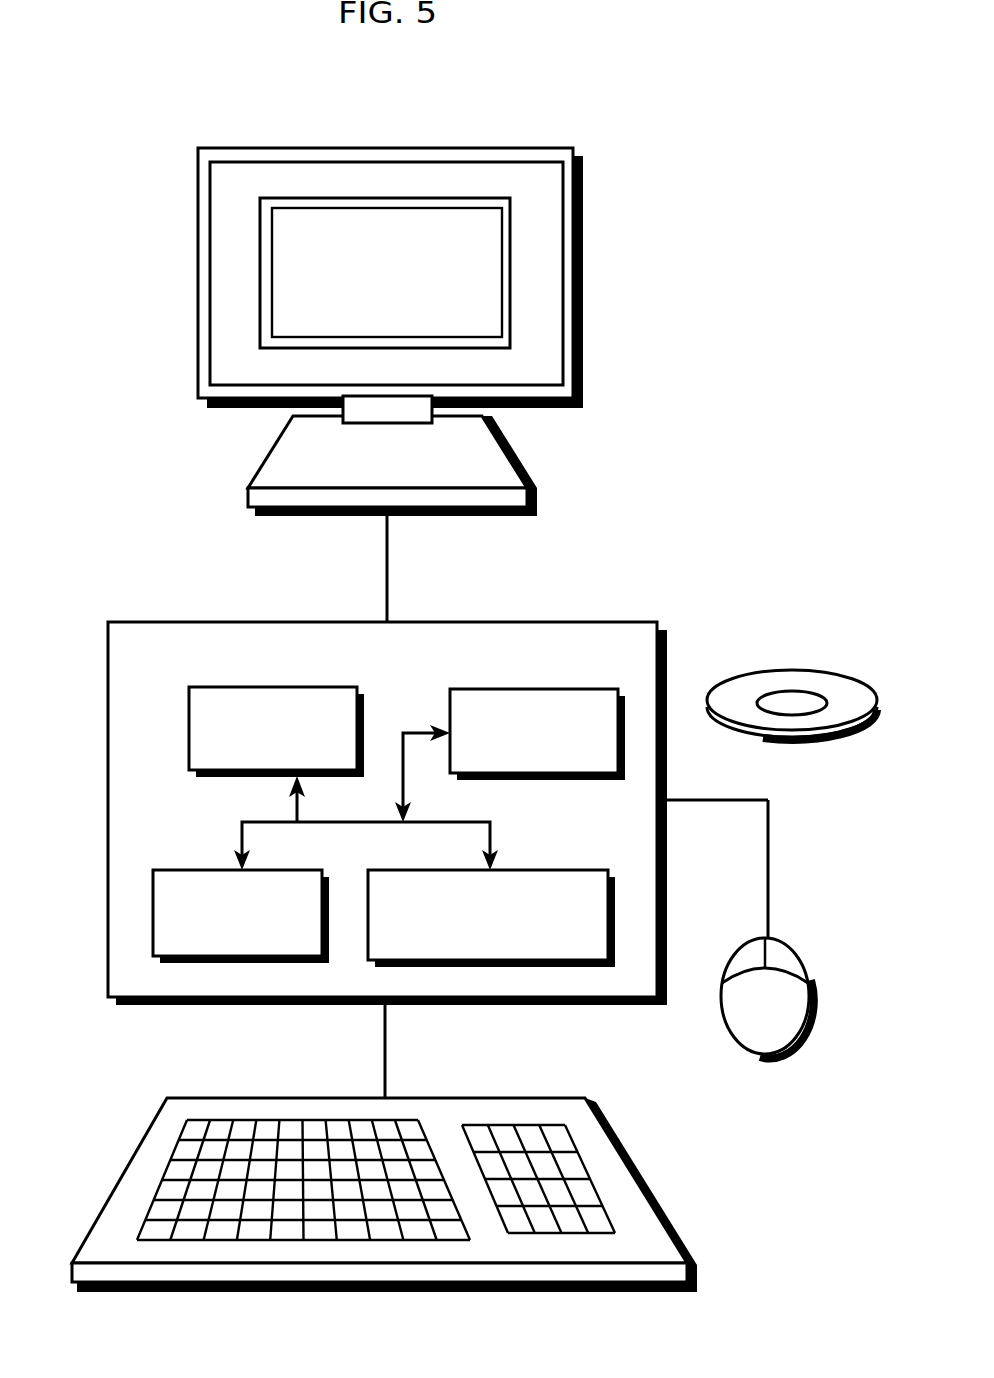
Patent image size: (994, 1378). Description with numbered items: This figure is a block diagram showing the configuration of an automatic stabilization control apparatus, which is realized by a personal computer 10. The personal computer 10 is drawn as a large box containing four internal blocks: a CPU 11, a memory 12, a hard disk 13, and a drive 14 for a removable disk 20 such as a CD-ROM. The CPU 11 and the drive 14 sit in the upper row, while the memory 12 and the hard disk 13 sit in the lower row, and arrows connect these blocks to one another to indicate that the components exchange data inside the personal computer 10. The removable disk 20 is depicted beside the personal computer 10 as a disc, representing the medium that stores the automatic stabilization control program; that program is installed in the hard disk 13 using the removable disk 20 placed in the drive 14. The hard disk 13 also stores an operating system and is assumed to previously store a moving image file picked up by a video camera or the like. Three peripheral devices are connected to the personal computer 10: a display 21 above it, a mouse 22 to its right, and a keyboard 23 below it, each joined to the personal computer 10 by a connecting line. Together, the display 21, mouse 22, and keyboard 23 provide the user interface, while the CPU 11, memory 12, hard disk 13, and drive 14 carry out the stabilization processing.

The personal computer 10 is at (582, 622).
The CPU 11 is at (310, 687).
The memory 12 is at (197, 870).
The hard disk 13 is at (545, 870).
The drive 14 is at (558, 689).
The removable disk 20 is at (788, 670).
The display 21 is at (473, 147).
The mouse 22 is at (788, 948).
The keyboard 23 is at (119, 1181).